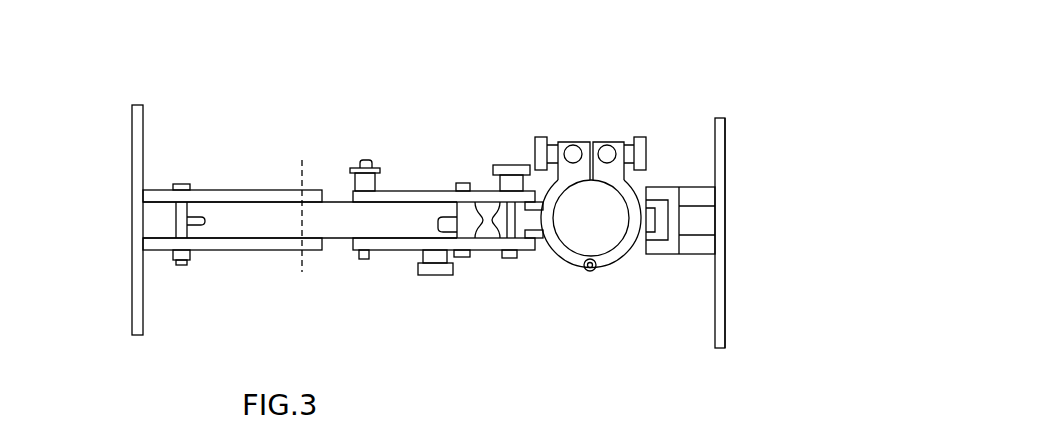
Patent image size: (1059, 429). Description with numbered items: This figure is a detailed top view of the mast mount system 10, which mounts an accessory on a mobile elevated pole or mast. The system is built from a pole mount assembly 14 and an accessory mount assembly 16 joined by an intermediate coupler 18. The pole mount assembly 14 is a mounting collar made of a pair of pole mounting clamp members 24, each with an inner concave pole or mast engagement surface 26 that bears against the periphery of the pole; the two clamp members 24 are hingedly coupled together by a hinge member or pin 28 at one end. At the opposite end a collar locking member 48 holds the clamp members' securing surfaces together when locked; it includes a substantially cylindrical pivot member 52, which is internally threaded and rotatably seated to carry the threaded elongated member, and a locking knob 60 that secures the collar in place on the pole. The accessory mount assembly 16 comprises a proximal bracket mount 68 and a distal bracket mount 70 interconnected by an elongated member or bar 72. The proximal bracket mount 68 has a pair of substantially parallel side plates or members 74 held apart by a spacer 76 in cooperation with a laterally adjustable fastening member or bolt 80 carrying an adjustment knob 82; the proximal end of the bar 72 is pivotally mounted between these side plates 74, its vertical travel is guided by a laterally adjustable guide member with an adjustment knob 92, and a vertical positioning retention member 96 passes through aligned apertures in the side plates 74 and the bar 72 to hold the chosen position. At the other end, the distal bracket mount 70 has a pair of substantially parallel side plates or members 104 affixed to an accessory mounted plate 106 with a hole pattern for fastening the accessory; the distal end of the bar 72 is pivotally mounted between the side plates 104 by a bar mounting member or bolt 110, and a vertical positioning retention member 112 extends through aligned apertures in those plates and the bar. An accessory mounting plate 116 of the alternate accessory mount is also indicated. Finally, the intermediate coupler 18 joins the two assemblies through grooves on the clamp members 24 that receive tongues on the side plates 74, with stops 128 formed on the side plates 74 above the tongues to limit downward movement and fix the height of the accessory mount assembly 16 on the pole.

The mast mount system 10 is at (290, 107).
The pole mount assembly 14 is at (573, 287).
The accessory mount assembly 16 is at (745, 112).
The intermediate coupler 18 is at (180, 78).
The pole mounting clamp member 24 is at (565, 262).
The inner concave pole or mast engagement surface 26 is at (557, 240).
The hinge member or pin 28 is at (591, 272).
The collar locking member 48 is at (540, 133).
The substantially cylindrical pivot member 52 is at (578, 152).
The locking knob 60 is at (525, 138).
The proximal bracket mount 68 is at (473, 100).
The distal bracket mount 70 is at (192, 283).
The elongated member or bar 72 is at (337, 220).
The substantially parallel side plate or member 74 is at (408, 187).
The spacer 76 is at (484, 232).
The laterally adjustable fastening member or bolt 80 is at (510, 222).
The adjustment knob 82 is at (512, 164).
The adjustment knob 92 is at (437, 272).
The vertical positioning retention member 96 is at (367, 260).
The substantially parallel side plate or member 104 is at (241, 190).
The accessory mounted plate 106 is at (132, 203).
The bar mounting member or bolt 110 is at (182, 213).
The vertical positioning retention member 112 is at (295, 187).
The accessory mounting plate 116 is at (725, 283).
The stop 128 is at (647, 200).